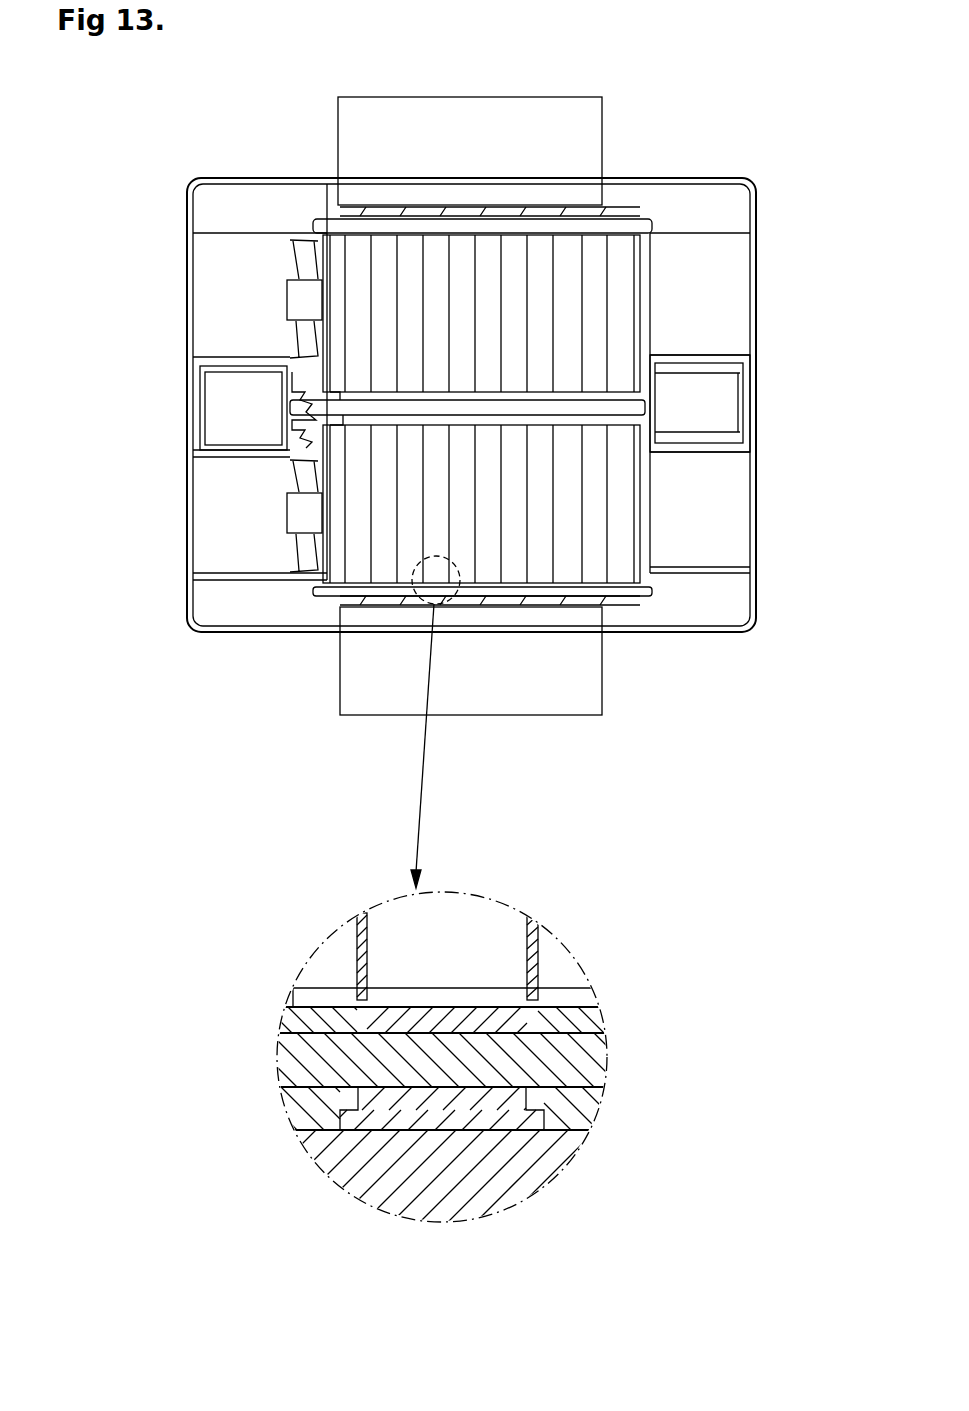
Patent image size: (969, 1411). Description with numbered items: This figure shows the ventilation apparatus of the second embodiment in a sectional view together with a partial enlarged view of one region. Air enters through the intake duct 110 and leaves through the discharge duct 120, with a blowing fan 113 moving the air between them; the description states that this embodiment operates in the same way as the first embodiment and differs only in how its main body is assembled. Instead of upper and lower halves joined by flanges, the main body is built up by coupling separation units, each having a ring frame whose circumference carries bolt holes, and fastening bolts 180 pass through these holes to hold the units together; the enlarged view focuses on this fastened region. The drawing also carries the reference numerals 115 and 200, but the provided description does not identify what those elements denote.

The intake duct 110 is at (730, 296).
The discharge duct 120 is at (733, 517).
The blowing fan 113 is at (292, 298).
The housing window 115 is at (218, 416).
The battery module block 200 is at (238, 178).
The fastening bolts 180 is at (443, 1072).